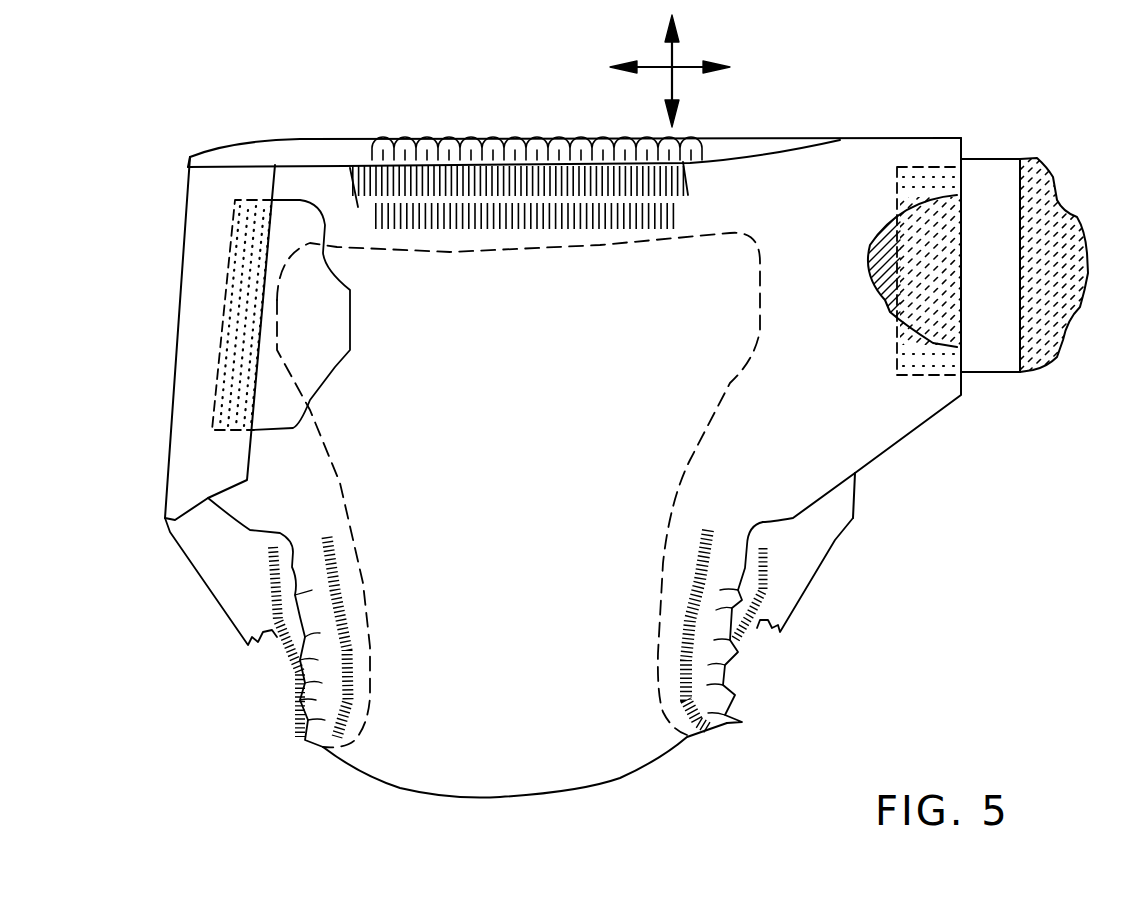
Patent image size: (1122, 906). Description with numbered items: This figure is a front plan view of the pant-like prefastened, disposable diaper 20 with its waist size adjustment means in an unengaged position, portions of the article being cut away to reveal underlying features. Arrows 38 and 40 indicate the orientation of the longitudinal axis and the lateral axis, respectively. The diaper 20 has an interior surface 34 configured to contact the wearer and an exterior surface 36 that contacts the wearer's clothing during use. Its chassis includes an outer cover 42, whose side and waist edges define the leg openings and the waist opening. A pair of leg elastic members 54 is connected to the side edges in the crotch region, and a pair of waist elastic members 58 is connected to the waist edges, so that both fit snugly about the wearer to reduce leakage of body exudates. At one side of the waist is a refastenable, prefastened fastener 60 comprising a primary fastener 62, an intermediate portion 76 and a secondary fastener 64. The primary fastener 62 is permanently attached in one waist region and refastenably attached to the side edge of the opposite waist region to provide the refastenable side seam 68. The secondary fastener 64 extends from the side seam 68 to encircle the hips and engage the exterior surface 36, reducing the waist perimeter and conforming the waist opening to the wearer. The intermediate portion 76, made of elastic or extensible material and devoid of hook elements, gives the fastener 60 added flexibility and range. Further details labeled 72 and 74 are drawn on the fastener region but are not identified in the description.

The pant-like prefastened, disposable diaper 20 is at (178, 130).
The interior surface 34 is at (373, 152).
The exterior surface 36 is at (333, 188).
The longitudinal axis arrow 38 is at (668, 55).
The lateral axis arrow 40 is at (688, 68).
The outer cover 42 is at (497, 533).
The leg elastic members 54 is at (323, 743).
The waist elastic members 58 is at (480, 195).
The refastenable, prefastened fastener 60 is at (1018, 155).
The primary fastener 62 is at (940, 325).
The secondary fastener 64 is at (1033, 318).
The refastenable side seam 68 is at (255, 160).
The fastening surface 72 is at (877, 277).
The tab grip portion 74 is at (1073, 215).
The intermediate portion 76 is at (1007, 235).